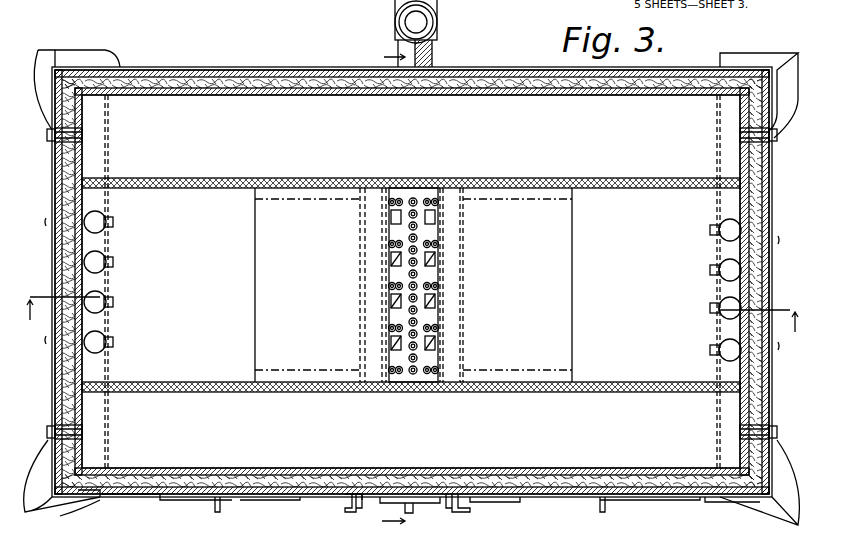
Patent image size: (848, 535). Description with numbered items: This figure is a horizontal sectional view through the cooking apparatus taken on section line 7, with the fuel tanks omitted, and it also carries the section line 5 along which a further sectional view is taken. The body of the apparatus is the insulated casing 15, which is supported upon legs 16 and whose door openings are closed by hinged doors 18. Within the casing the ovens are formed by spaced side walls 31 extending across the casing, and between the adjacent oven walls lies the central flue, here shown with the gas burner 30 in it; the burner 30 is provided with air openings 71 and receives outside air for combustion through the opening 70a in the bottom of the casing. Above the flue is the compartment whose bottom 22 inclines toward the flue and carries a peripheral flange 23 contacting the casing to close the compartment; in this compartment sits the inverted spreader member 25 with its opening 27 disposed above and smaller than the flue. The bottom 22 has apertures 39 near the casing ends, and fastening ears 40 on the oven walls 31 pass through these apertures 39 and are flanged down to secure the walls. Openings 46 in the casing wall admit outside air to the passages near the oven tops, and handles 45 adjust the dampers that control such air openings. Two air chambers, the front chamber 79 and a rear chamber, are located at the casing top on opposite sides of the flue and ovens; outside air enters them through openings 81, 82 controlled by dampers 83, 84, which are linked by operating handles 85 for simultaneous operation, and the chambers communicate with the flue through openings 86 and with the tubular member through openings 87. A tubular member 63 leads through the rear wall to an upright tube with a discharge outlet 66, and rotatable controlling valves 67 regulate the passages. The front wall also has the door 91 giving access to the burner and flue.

The section line 5- 5 is at (398, 286).
The section line 7- 7 is at (413, 309).
The casing 15 is at (712, 72).
The legs 16 is at (100, 62).
The doors 18 is at (312, 478).
The bottom 22 is at (222, 352).
The peripheral flange 23 is at (176, 180).
The spreader member 25 is at (560, 282).
The opening 27 is at (398, 247).
The gas burner 30 is at (412, 285).
The side walls 31 is at (110, 150).
The apertures 39 is at (96, 224).
The fastening ears 40 is at (113, 302).
The handles 45 is at (355, 514).
The openings 46 is at (82, 222).
The tubular member 63 is at (430, 64).
The discharge outlet 66 is at (396, 4).
The controlling valves 67 is at (406, 22).
The opening 70a is at (430, 264).
The air openings 71 is at (434, 226).
The air chamber 79 is at (200, 462).
The opening 81 is at (82, 432).
The opening 82 is at (50, 132).
The damper 83 is at (50, 428).
The damper 84 is at (52, 138).
The operating handles 85 is at (60, 500).
The openings 86 is at (380, 180).
The openings 87 is at (428, 180).
The door 91 is at (440, 497).